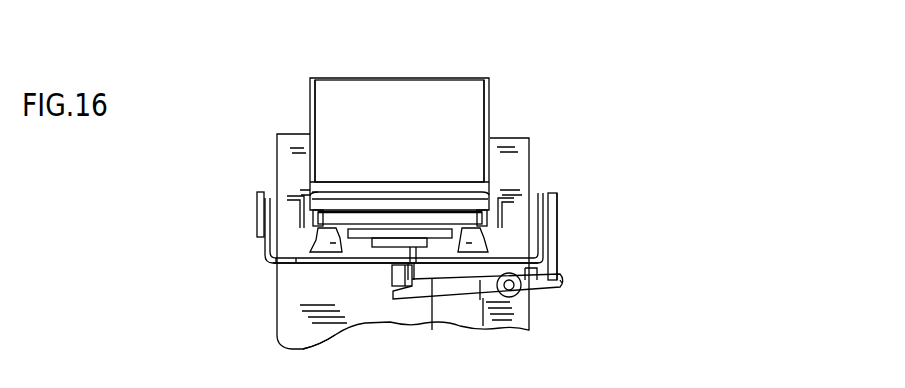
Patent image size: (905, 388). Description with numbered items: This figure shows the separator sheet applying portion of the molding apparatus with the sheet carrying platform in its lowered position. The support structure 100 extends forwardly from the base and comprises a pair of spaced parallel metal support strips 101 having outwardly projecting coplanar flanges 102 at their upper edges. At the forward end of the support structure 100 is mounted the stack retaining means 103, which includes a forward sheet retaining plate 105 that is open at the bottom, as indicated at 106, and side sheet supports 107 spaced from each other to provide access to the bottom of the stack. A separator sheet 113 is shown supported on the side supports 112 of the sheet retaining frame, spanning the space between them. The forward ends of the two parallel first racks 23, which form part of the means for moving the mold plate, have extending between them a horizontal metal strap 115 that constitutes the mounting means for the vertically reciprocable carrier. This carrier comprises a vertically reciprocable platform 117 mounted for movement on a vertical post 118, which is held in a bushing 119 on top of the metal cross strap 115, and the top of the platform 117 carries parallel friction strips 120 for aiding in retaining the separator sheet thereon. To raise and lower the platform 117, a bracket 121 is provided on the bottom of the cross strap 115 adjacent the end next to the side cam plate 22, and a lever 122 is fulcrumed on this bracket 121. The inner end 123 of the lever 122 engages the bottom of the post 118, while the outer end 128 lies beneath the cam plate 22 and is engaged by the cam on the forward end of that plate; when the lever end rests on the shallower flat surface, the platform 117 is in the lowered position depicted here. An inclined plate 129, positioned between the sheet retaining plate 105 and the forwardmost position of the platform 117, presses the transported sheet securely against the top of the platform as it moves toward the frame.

The side cam plate 22 is at (557, 208).
The first horizontal racks 23 is at (256, 199).
The support structure 100 is at (247, 250).
The support strips 101 is at (298, 224).
The flanges 102 is at (508, 197).
The stack retaining means 103 is at (490, 110).
The forward sheet retaining plate 105 is at (378, 92).
The open bottom 106 is at (421, 186).
The side sheet supports 107 is at (316, 225).
The side supports 112 is at (350, 254).
The separator sheet 113 is at (392, 210).
The metal strap 115 is at (296, 266).
The carrier platform 117 is at (383, 232).
The vertical post 118 is at (393, 279).
The bushing 119 is at (432, 330).
The friction strips 120 is at (353, 210).
The bracket 121 is at (520, 300).
The lever 122 is at (480, 300).
The inner end of lever 123 is at (398, 295).
The outer end of lever 128 is at (560, 288).
The inclined plate 129 is at (327, 193).